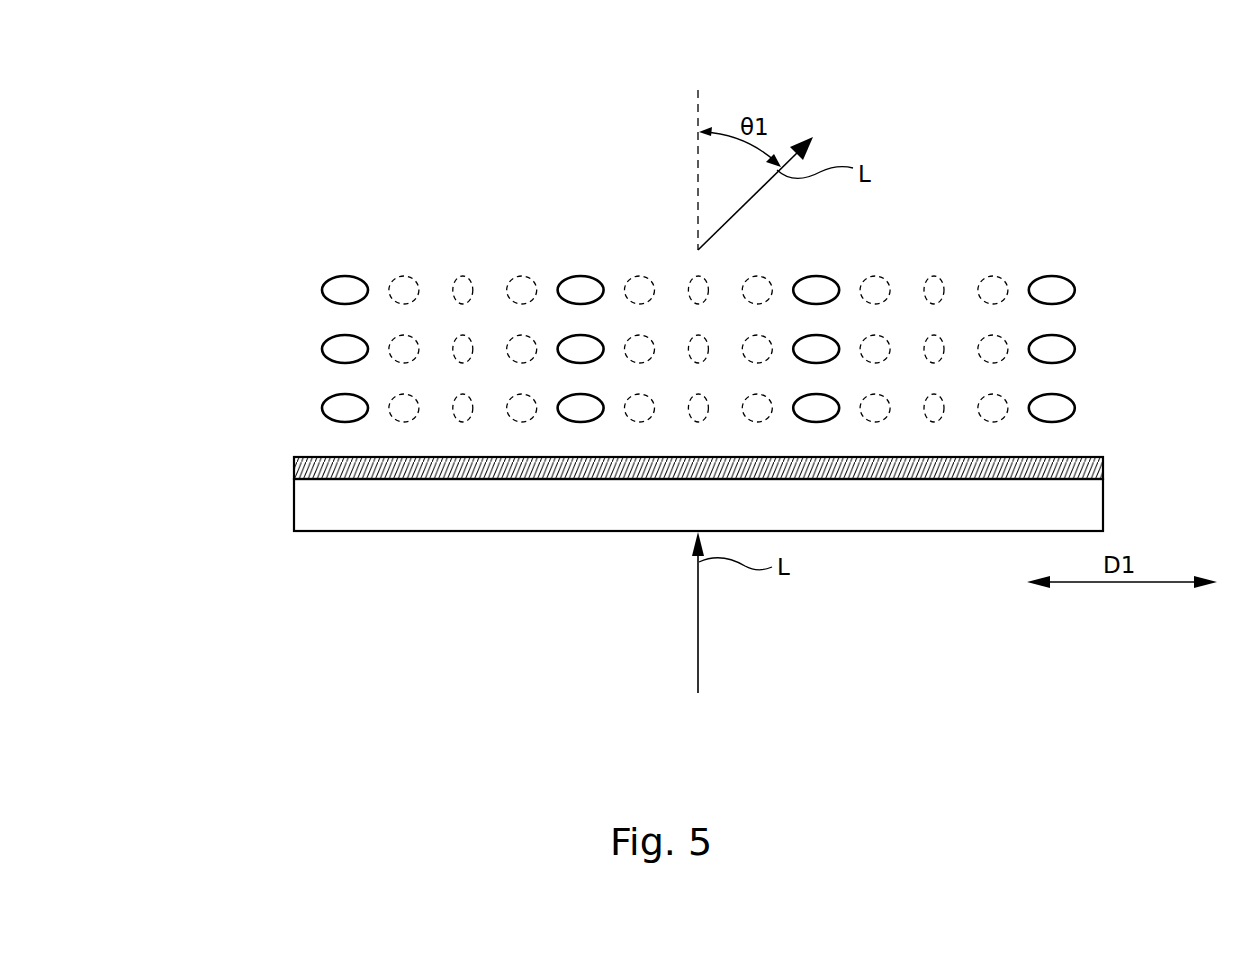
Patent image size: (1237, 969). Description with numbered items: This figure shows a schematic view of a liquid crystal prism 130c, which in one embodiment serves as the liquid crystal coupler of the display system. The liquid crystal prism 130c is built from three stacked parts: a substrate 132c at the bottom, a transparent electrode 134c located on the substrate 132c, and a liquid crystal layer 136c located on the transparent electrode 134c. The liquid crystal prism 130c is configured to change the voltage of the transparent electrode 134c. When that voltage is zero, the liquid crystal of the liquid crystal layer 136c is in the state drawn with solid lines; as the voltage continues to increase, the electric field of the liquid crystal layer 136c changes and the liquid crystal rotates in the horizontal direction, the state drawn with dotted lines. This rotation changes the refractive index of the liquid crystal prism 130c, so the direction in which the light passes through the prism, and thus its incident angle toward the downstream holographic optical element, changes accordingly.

The liquid crystal prism 130c is at (1080, 165).
The substrate 132c is at (318, 513).
The transparent electrode 134c is at (318, 470).
The liquid crystal layer 136c is at (313, 265).